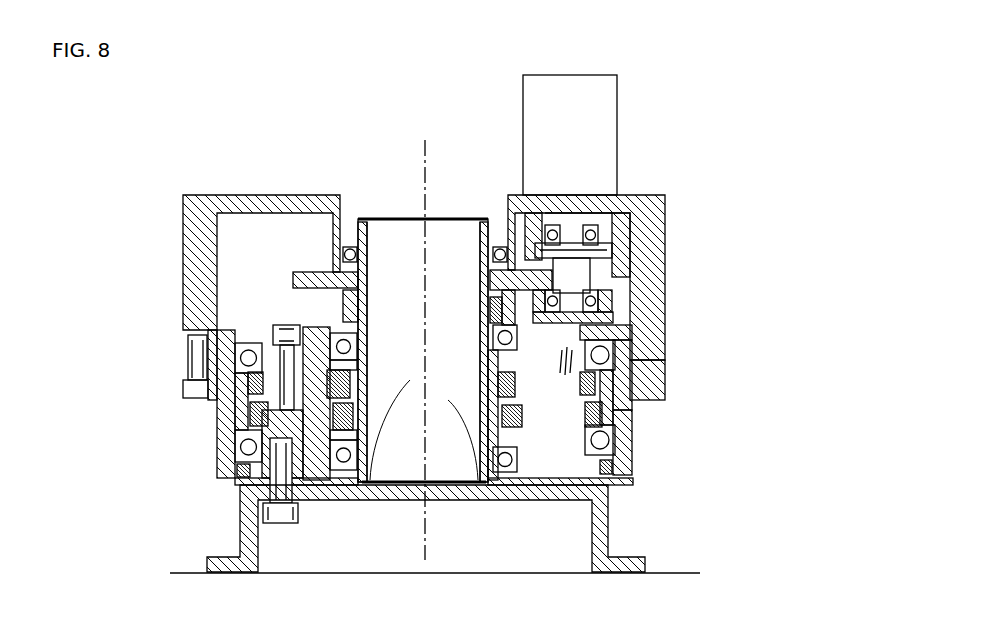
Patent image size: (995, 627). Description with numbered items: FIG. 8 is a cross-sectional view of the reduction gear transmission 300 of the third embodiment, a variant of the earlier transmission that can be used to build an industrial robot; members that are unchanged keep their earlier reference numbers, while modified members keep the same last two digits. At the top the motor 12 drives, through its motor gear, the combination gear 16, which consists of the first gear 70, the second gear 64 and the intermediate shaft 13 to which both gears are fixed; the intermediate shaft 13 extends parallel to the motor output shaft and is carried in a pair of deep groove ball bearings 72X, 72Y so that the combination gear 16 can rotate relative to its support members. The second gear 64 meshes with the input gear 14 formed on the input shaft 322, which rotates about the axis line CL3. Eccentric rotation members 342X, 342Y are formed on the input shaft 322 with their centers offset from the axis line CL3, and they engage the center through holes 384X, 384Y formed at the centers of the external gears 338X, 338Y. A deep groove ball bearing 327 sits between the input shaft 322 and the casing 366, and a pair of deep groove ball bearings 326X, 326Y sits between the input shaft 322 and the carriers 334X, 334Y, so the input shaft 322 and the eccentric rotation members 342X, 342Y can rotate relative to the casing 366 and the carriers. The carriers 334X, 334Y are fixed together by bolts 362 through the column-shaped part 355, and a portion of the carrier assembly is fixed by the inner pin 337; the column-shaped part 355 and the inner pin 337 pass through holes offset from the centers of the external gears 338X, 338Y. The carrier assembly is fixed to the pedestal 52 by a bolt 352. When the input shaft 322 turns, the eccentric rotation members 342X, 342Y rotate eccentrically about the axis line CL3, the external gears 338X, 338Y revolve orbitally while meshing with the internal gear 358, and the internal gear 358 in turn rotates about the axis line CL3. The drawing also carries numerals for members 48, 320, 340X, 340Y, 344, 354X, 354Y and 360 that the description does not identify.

The motor 12 is at (617, 112).
The intermediate shaft 13 is at (577, 213).
The input gear 14 is at (525, 213).
The combination gear 16 is at (612, 275).
The bolt 48 is at (400, 483).
The pedestal 52 is at (600, 520).
The second gear 64 is at (618, 305).
The first gear 70 is at (603, 262).
The deep groove ball bearing 72X is at (608, 228).
The deep groove ball bearing 72Y is at (605, 314).
The reduction gear transmission 300 is at (722, 118).
The hollow shaft 320 is at (468, 222).
The input shaft 322 is at (480, 470).
The deep groove ball bearing 326X is at (338, 302).
The deep groove ball bearing 326Y is at (345, 472).
The deep groove ball bearing 327 is at (345, 243).
The carrier 334X is at (242, 335).
The carrier 334Y is at (240, 420).
The inner pin 337 is at (590, 484).
The external gear 338X is at (633, 393).
The external gear 338Y is at (625, 412).
The upper seal 340X is at (207, 366).
The lower seal 340Y is at (232, 402).
The eccentric rotation member 342X is at (366, 400).
The eccentric rotation member 342Y is at (484, 400).
The seal member 344 is at (237, 470).
The bolt 352 is at (278, 514).
The upper spacer 354X is at (240, 346).
The lower spacer 354Y is at (240, 442).
The column-shaped part 355 is at (245, 484).
The internal gear 358 is at (625, 443).
The clamp 360 is at (196, 370).
The bolt 362 is at (283, 327).
The casing 366 is at (647, 259).
The center through hole 384X is at (420, 360).
The center through hole 384Y is at (484, 415).
The axis line CL3 is at (422, 350).